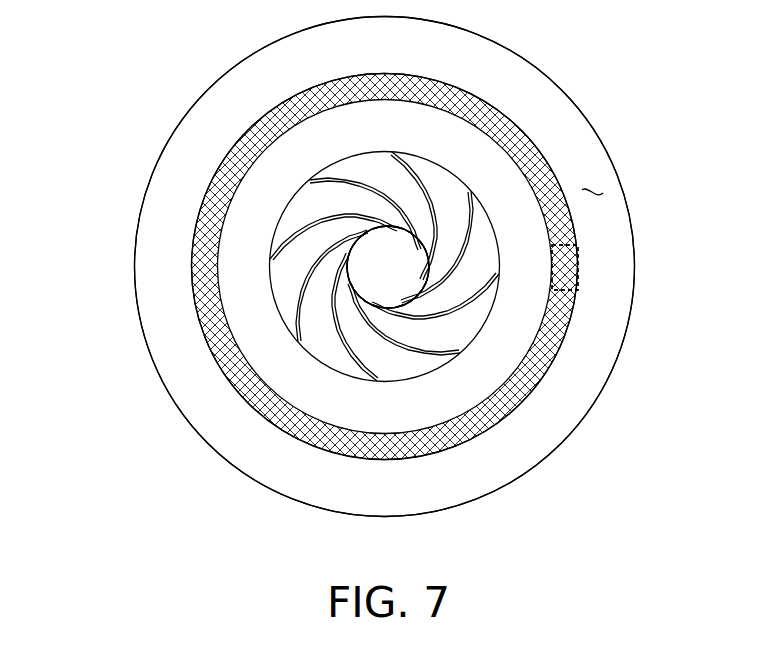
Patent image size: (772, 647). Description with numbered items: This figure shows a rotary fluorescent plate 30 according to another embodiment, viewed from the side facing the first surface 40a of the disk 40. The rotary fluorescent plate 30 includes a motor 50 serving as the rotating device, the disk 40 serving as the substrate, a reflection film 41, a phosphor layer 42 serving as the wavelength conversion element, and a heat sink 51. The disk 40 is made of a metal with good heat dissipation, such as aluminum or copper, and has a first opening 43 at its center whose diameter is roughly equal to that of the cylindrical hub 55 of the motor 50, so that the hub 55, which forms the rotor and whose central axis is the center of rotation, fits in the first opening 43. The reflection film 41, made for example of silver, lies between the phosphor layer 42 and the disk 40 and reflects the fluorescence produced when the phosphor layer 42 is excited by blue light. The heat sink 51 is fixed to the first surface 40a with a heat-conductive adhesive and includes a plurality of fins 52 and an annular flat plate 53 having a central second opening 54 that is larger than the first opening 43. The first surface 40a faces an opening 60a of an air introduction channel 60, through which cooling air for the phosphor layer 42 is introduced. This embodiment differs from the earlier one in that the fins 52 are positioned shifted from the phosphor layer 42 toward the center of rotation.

The rotary fluorescent plate 30 is at (172, 92).
The disk 40 is at (570, 142).
The first surface 40a is at (600, 182).
The phosphor layer 42 is at (192, 240).
The reflection film 41 is at (385, 267).
The opening 60a is at (583, 262).
The air introduction channel 60 is at (565, 267).
The heat sink 51 is at (675, 330).
The flat plate 53 is at (462, 283).
The fins 52 is at (463, 315).
The first opening 43 is at (350, 290).
The second opening 54 is at (376, 303).
The hub 55 is at (385, 288).
The motor 50 is at (388, 267).